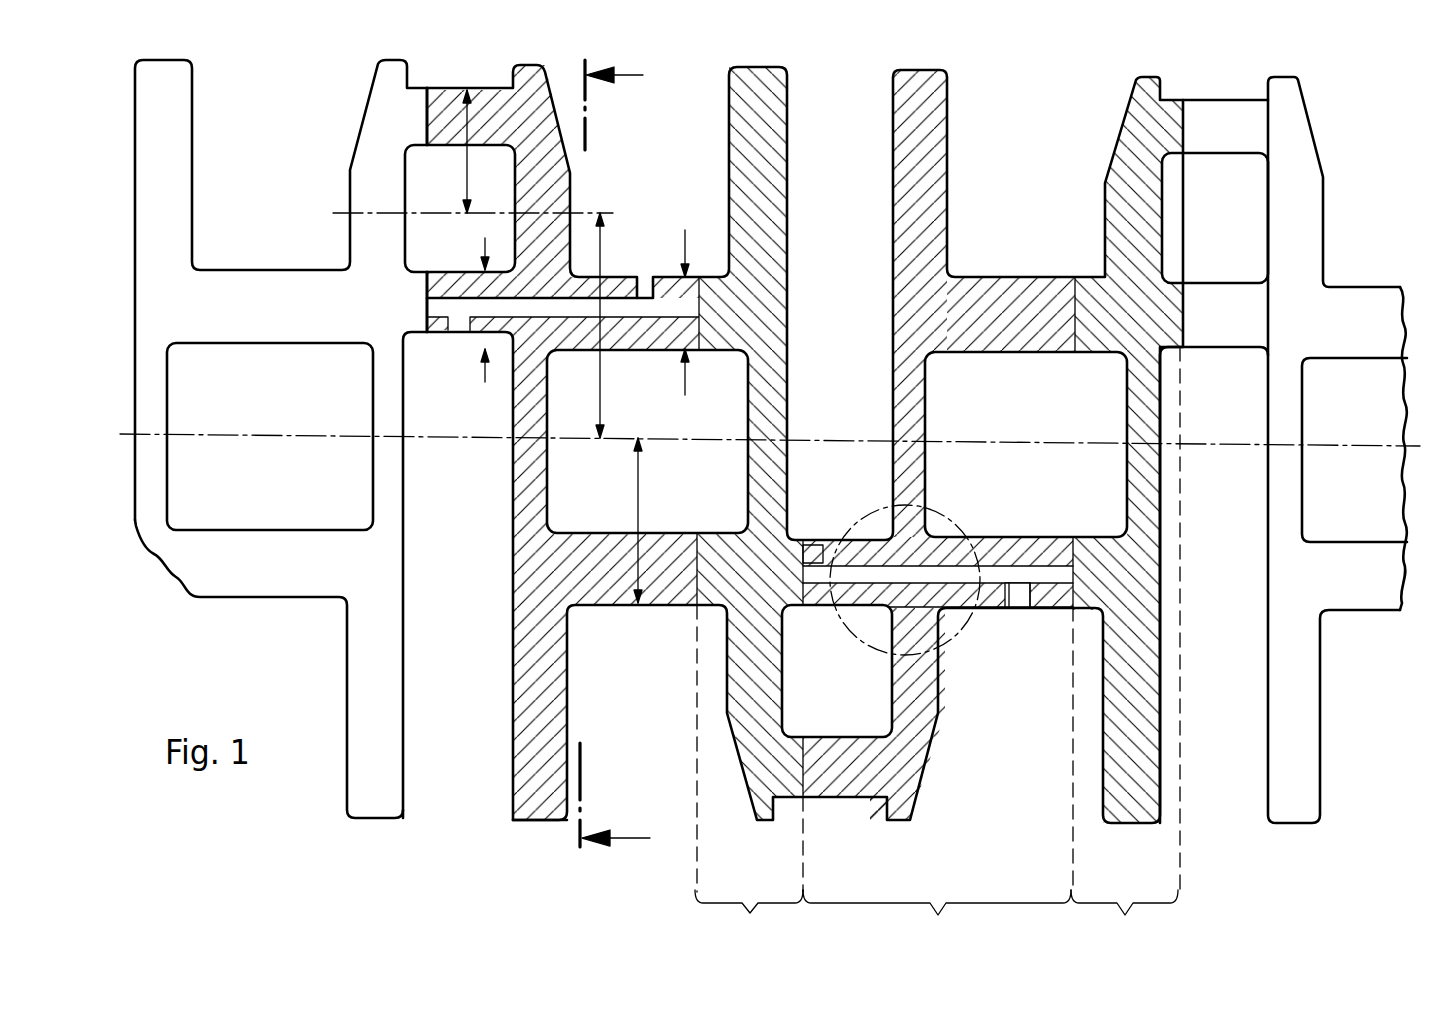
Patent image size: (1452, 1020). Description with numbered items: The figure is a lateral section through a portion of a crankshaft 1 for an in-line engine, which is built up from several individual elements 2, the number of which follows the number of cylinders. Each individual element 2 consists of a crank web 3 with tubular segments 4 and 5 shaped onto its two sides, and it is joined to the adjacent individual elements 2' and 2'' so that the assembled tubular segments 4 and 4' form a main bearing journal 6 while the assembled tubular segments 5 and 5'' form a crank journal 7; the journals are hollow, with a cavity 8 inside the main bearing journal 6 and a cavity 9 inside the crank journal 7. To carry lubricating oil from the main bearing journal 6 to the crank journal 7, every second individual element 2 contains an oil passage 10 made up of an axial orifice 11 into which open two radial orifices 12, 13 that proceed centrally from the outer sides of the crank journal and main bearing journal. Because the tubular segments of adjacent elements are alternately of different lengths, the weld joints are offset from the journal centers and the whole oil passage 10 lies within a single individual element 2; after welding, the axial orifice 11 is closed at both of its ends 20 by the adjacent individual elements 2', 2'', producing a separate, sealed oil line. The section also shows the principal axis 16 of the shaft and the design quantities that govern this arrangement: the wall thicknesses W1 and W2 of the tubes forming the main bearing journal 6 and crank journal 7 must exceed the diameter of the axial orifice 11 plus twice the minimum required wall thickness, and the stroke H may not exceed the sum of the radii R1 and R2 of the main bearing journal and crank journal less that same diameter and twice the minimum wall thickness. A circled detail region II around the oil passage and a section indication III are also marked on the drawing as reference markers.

The crankshaft 1 is at (482, 858).
The individual element 2 is at (937, 921).
The adjacent individual element 2' is at (1124, 919).
The adjacent individual element 2'' is at (749, 919).
The crank web 3 is at (932, 112).
The tubular segment 4 is at (978, 286).
The tubular segment 4' is at (1116, 450).
The tubular segment 5 is at (845, 740).
The tubular segment 5'' is at (750, 470).
The main bearing journal 6 is at (1018, 302).
The crank journal 7 is at (864, 770).
The cavity 8 is at (946, 380).
The cavity 9 is at (800, 655).
The oil passage 10 is at (1000, 578).
The axial orifice 11 is at (960, 578).
The radial orifice 12 is at (1021, 597).
The radial orifice 13 is at (828, 560).
The principal axis 16 is at (830, 440).
The ends 20 is at (798, 548).
The radius of main bearing journal R1 is at (640, 520).
The radius of crank journal R2 is at (482, 158).
The stroke H is at (600, 362).
The wall thickness W1 is at (688, 305).
The wall thickness W2 is at (490, 318).
The detail II is at (960, 577).
The section III is at (615, 453).